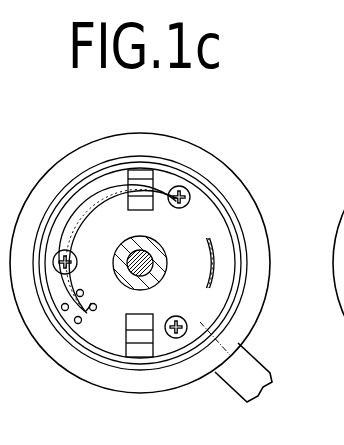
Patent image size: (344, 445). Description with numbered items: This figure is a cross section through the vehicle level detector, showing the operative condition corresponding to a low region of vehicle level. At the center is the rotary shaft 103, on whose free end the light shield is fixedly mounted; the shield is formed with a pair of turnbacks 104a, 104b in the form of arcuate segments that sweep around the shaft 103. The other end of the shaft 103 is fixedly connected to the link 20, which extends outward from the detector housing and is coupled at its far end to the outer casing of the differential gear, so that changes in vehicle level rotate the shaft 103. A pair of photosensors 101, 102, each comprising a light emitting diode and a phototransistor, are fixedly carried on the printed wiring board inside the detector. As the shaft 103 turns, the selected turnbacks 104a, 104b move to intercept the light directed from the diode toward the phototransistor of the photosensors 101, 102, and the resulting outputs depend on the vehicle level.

The photosensor 101 is at (183, 360).
The photosensor 102 is at (157, 171).
The rotary shaft 103 is at (163, 272).
The turnback 104a is at (172, 185).
The turnback 104b is at (215, 253).
The link 20 is at (257, 357).